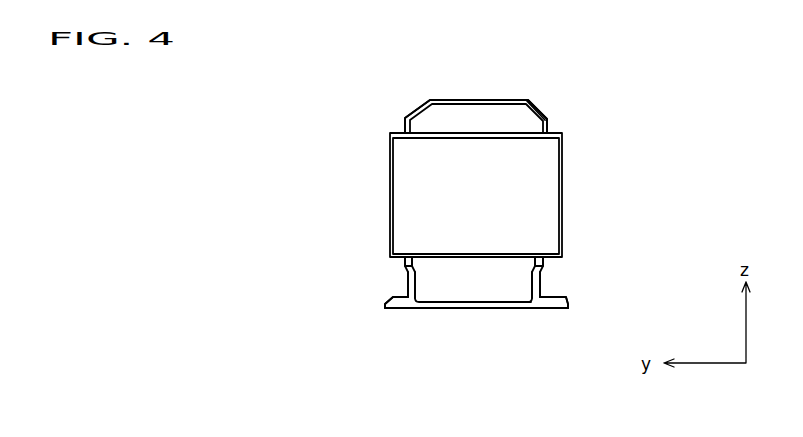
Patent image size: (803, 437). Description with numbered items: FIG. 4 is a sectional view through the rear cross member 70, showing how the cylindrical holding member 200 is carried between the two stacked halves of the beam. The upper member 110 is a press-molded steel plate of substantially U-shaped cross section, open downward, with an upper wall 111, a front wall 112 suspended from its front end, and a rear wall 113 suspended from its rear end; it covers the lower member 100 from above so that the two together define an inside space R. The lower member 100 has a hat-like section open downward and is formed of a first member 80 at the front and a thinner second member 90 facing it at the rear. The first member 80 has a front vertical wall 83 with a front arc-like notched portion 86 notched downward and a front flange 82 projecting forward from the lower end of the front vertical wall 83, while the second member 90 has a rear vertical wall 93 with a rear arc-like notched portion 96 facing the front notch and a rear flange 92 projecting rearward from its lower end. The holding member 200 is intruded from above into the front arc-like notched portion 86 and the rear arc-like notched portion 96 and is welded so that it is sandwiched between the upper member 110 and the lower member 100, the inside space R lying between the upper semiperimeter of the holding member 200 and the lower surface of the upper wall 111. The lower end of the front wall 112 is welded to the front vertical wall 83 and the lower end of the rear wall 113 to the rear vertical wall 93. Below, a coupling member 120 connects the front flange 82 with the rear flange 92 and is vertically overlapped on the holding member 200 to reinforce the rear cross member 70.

The rear cross member 70 is at (257, 76).
The holding member 200 is at (562, 137).
The upper member 110 is at (399, 82).
The upper wall 111 is at (470, 100).
The front wall 112 is at (404, 124).
The rear wall 113 is at (548, 125).
The inside space R is at (512, 115).
The lower member 100 is at (291, 251).
The first member 80 is at (329, 290).
The front arc-like notched portion 86 is at (400, 258).
The front vertical wall 83 is at (411, 276).
The front flange 82 is at (390, 299).
The second member 90 is at (602, 254).
The rear arc-like notched portion 96 is at (545, 254).
The rear vertical wall 93 is at (542, 276).
The rear flange 92 is at (564, 296).
The coupling member 120 is at (532, 309).